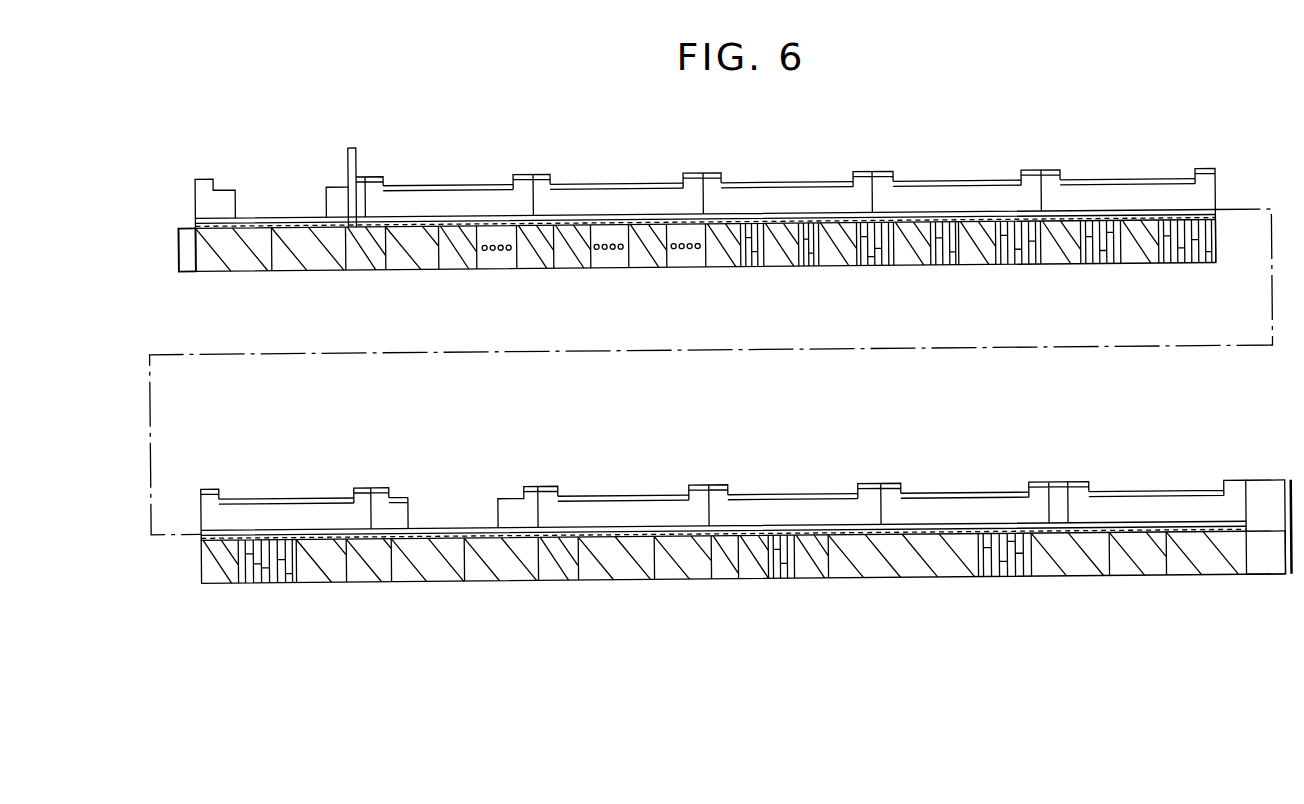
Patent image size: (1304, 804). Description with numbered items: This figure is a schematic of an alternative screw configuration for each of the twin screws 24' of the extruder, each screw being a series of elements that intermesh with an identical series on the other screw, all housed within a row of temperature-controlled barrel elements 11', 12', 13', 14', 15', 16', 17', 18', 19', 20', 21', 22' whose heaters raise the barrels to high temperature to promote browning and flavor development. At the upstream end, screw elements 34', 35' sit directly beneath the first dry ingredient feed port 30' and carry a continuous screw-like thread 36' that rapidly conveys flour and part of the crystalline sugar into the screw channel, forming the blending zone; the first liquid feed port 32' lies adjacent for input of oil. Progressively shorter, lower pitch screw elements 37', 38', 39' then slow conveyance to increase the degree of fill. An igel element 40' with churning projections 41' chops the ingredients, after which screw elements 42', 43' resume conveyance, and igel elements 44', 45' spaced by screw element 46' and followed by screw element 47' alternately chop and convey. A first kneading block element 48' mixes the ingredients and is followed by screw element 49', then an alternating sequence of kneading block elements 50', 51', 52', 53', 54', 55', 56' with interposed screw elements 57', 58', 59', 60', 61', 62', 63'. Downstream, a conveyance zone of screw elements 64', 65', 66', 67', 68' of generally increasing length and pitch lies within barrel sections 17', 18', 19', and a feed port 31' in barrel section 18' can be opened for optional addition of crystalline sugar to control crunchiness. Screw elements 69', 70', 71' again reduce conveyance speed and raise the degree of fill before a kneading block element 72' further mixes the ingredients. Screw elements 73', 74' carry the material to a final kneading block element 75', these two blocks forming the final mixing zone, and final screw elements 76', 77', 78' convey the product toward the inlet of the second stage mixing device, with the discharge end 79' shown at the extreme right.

The barrel element 11' is at (213, 177).
The barrel element 12' is at (382, 170).
The barrel element 13' is at (534, 171).
The barrel element 14' is at (714, 172).
The barrel element 15' is at (879, 170).
The barrel element 16' is at (1050, 169).
The barrel section 17' is at (219, 496).
The barrel section 18' is at (376, 485).
The barrel section 19' is at (536, 479).
The barrel element 20' is at (715, 480).
The barrel element 21' is at (887, 478).
The barrel element 22' is at (1068, 482).
The twin screw 24' is at (196, 286).
The first dry ingredient feed port 30' is at (268, 165).
The feed port 31' is at (439, 480).
The first liquid feed port 32' is at (337, 168).
The screw element 34' is at (238, 273).
The screw element 35' is at (308, 269).
The continuous screw-like thread 36' is at (275, 243).
The screw element 37' is at (366, 271).
The screw element 38' is at (412, 268).
The screw element 39' is at (459, 268).
The igel element 40' is at (506, 268).
The churning projections 41' is at (475, 203).
The screw element 42' is at (541, 268).
The screw element 43' is at (581, 269).
The igel element 44' is at (620, 266).
The igel element 45' is at (694, 268).
The screw element 46' is at (655, 268).
The screw element 47' is at (728, 267).
The first kneading block element 48' is at (764, 267).
The screw element 49' is at (789, 269).
The kneading block element 50' is at (825, 266).
The kneading block element 51' is at (877, 263).
The kneading block element 52' is at (954, 269).
The kneading block element 53' is at (1024, 271).
The kneading block element 54' is at (1104, 269).
The kneading block element 55' is at (1190, 262).
The kneading block element 56' is at (273, 582).
The screw element 57' is at (845, 277).
The screw element 58' is at (907, 271).
The screw element 59' is at (986, 266).
The screw element 60' is at (1066, 263).
The screw element 61' is at (1147, 266).
The screw element 62' is at (225, 582).
The screw element 63' is at (323, 582).
The screw element 64' is at (375, 583).
The screw element 65' is at (430, 580).
The screw element 66' is at (501, 582).
The screw element 67' is at (563, 582).
The screw element 68' is at (616, 581).
The screw element 69' is at (683, 580).
The screw element 70' is at (729, 580).
The screw element 71' is at (760, 580).
The kneading block element 72' is at (792, 580).
The screw element 73' is at (825, 578).
The screw element 74' is at (903, 576).
The final kneading block element 75' is at (1007, 576).
The screw element 76' is at (1070, 575).
The screw element 77' is at (1138, 575).
The screw element 78' is at (1202, 575).
The outlet end block 79' is at (1268, 503).